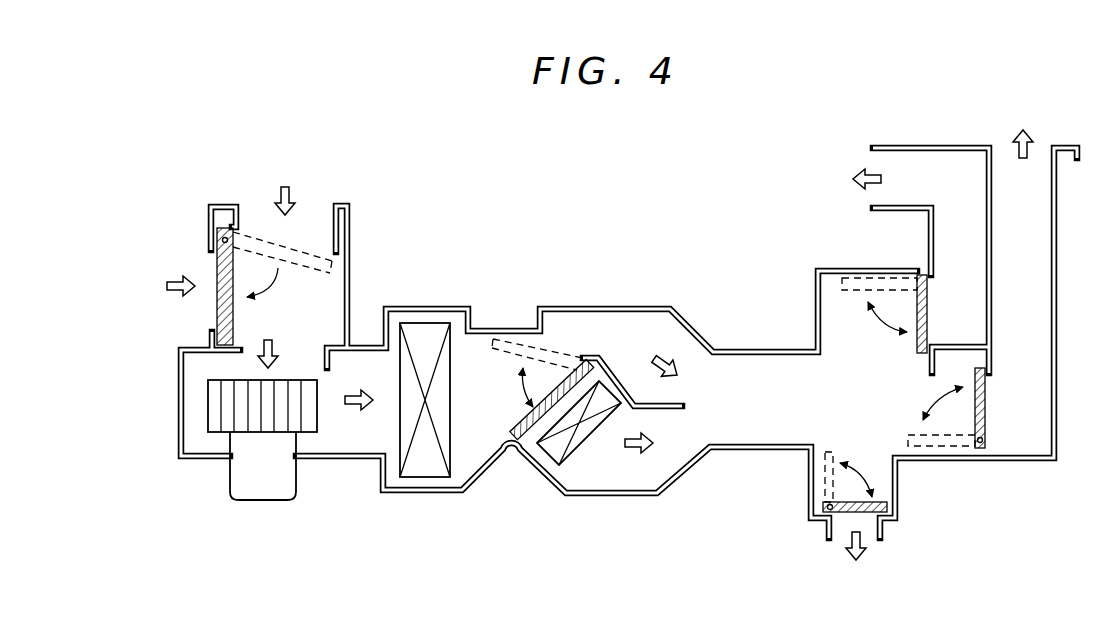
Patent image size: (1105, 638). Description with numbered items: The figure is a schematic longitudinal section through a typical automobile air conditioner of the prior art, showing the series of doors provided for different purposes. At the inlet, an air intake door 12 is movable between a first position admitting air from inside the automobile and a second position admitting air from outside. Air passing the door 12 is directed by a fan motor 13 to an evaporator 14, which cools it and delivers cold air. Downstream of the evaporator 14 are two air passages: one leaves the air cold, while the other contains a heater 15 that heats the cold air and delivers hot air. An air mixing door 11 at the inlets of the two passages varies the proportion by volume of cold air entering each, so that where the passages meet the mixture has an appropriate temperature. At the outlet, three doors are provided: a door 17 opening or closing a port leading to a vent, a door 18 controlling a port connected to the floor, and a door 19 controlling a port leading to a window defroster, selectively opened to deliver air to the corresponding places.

The air mixing door 11 is at (516, 426).
The air intake door 12 is at (217, 260).
The fan motor 13 is at (238, 476).
The evaporator 14 is at (421, 468).
The heater 15 is at (558, 448).
The door 17 is at (916, 300).
The door 18 is at (874, 500).
The door 19 is at (985, 428).